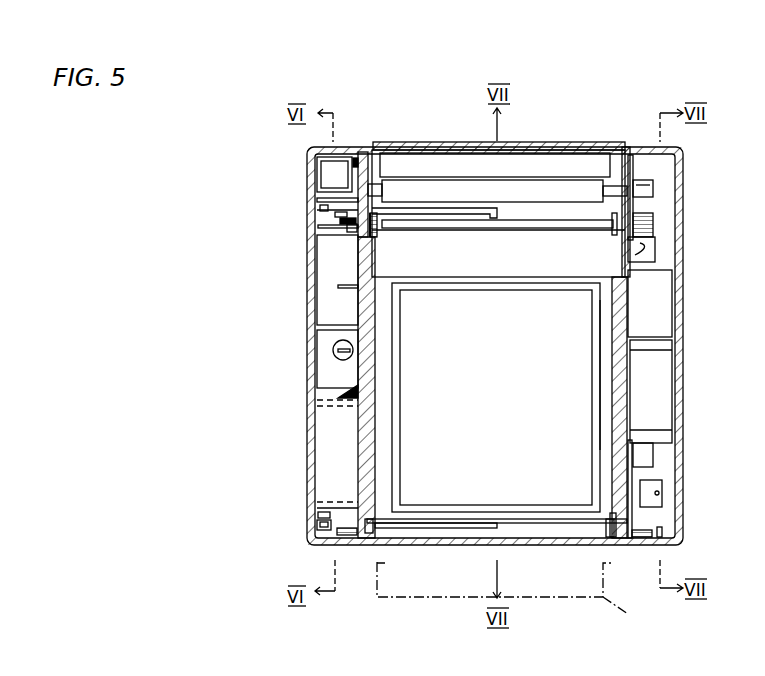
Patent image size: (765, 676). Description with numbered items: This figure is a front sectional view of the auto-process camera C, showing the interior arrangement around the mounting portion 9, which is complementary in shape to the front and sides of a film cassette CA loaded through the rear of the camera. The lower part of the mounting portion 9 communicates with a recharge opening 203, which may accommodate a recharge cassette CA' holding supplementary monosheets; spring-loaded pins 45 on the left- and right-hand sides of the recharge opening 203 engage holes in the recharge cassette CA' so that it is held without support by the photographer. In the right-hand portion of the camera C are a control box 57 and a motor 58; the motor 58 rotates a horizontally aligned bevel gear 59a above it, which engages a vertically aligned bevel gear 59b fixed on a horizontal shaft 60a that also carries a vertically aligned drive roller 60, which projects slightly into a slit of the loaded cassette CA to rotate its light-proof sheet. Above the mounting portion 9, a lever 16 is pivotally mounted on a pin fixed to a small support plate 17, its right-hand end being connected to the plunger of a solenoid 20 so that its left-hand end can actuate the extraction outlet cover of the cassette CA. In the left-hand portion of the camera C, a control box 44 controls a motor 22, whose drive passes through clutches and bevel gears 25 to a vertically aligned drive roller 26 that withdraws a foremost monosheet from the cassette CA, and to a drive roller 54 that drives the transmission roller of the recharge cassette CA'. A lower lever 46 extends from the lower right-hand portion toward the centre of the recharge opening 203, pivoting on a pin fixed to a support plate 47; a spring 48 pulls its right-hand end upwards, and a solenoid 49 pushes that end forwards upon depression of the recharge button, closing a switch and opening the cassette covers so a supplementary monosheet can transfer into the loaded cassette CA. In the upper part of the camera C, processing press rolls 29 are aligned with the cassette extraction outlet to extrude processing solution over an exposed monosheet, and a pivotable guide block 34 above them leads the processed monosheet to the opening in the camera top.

The auto-process camera C is at (681, 540).
The film cassette CA is at (669, 375).
The recharge cassette CA' is at (525, 602).
The mounting portion 9 is at (613, 315).
The lever 16 is at (420, 208).
The support plate 17 is at (353, 212).
The solenoid 20 is at (350, 195).
The motor 22 is at (660, 412).
The bevel gears 25 is at (640, 235).
The drive roller 26 is at (648, 197).
The processing press rolls 29 is at (587, 192).
The pivotable guide block 34 is at (572, 168).
The control box 44 is at (667, 283).
The spring-loaded pins 45 is at (370, 533).
The lever 46 is at (453, 528).
The support plate 47 is at (348, 538).
The spring 48 is at (320, 515).
The solenoid 49 is at (323, 530).
The drive roller 54 is at (613, 527).
The control box 57 is at (317, 370).
The motor 58 is at (328, 302).
The bevel gear 59a is at (350, 233).
The bevel gear 59b is at (347, 219).
The drive roller 60 is at (378, 232).
The horizontal shaft 60a is at (370, 213).
The recharge opening 203 is at (465, 533).